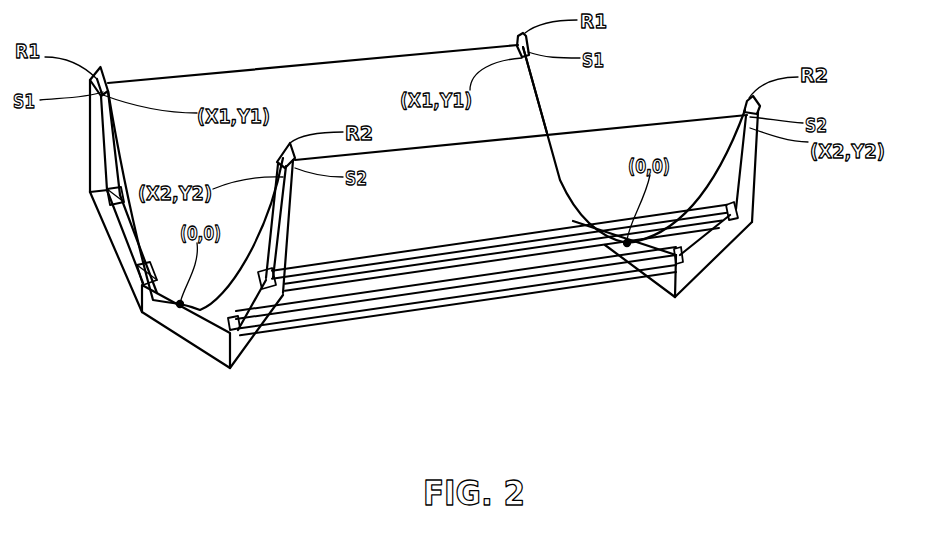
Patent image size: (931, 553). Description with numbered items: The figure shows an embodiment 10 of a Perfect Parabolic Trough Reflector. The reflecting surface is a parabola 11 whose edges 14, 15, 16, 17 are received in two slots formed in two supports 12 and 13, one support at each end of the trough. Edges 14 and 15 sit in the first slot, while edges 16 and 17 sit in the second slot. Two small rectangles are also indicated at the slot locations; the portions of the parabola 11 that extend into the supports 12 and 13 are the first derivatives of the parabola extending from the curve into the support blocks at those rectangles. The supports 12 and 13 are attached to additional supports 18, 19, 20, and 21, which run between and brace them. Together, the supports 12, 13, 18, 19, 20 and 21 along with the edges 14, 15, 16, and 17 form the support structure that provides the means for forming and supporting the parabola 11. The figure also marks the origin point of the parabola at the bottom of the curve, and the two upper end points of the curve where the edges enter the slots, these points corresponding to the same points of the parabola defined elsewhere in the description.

The embodiment of Perfect Parabolic Trough Reflector 10 is at (422, 212).
The parabola 11 is at (527, 92).
The support 12 is at (177, 323).
The support 13 is at (702, 250).
The edge 14 is at (112, 127).
The edge 15 is at (530, 70).
The edge 16 is at (727, 167).
The edge 17 is at (268, 212).
The additional support 18 is at (110, 188).
The additional support 19 is at (143, 272).
The additional support 20 is at (347, 318).
The additional support 21 is at (440, 243).